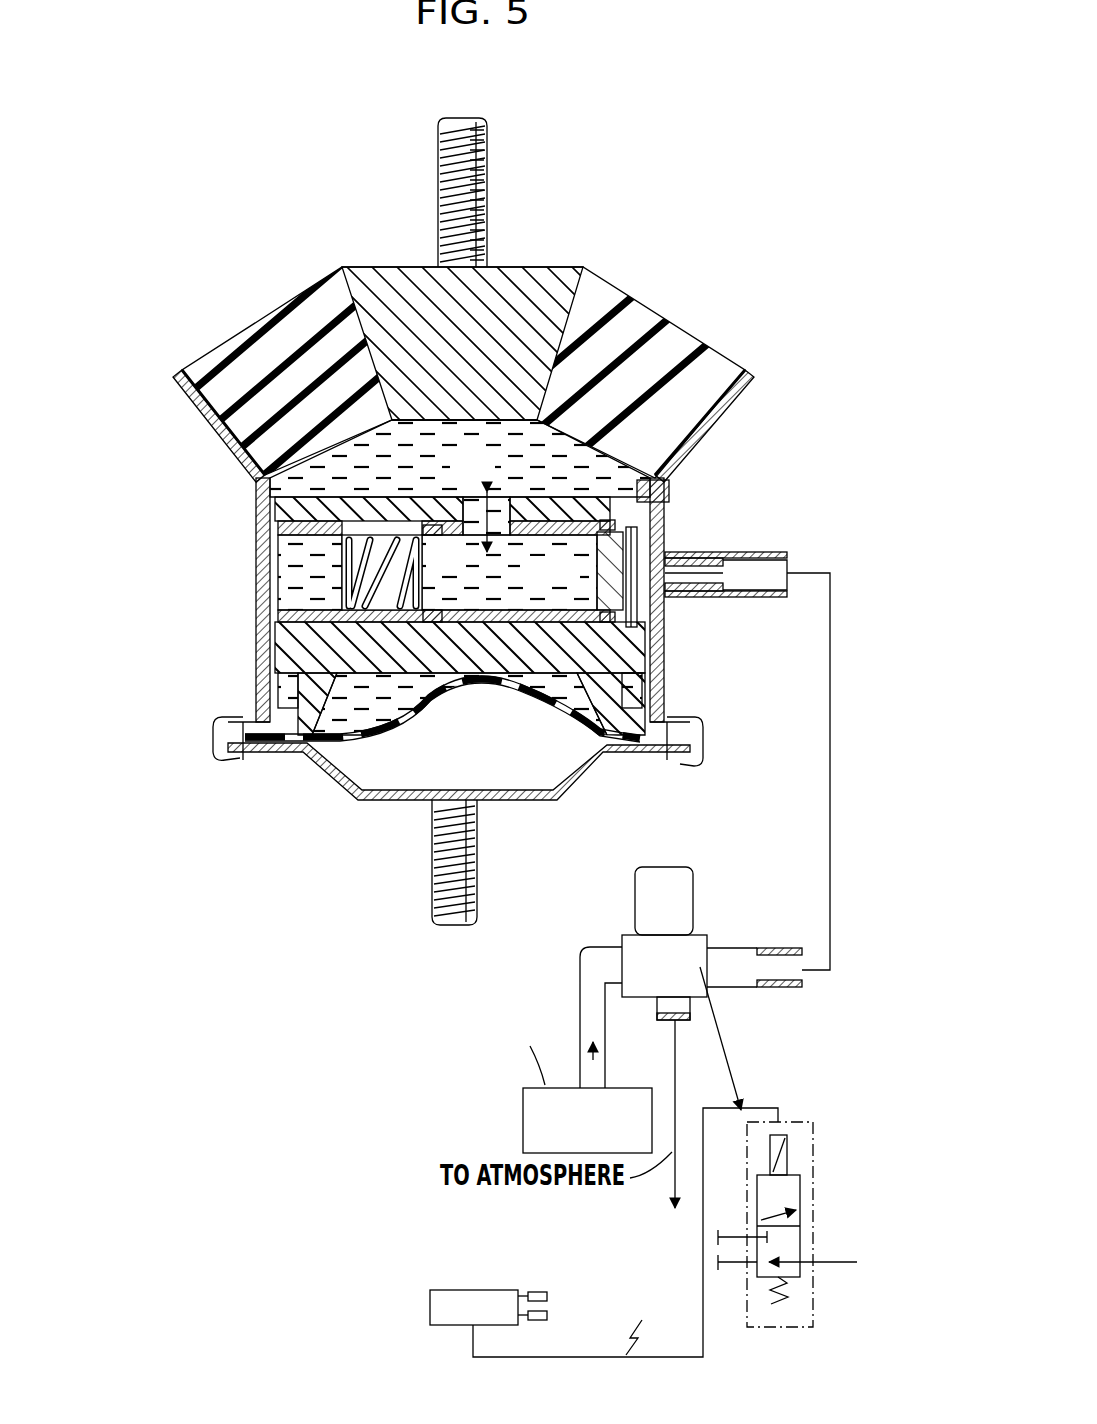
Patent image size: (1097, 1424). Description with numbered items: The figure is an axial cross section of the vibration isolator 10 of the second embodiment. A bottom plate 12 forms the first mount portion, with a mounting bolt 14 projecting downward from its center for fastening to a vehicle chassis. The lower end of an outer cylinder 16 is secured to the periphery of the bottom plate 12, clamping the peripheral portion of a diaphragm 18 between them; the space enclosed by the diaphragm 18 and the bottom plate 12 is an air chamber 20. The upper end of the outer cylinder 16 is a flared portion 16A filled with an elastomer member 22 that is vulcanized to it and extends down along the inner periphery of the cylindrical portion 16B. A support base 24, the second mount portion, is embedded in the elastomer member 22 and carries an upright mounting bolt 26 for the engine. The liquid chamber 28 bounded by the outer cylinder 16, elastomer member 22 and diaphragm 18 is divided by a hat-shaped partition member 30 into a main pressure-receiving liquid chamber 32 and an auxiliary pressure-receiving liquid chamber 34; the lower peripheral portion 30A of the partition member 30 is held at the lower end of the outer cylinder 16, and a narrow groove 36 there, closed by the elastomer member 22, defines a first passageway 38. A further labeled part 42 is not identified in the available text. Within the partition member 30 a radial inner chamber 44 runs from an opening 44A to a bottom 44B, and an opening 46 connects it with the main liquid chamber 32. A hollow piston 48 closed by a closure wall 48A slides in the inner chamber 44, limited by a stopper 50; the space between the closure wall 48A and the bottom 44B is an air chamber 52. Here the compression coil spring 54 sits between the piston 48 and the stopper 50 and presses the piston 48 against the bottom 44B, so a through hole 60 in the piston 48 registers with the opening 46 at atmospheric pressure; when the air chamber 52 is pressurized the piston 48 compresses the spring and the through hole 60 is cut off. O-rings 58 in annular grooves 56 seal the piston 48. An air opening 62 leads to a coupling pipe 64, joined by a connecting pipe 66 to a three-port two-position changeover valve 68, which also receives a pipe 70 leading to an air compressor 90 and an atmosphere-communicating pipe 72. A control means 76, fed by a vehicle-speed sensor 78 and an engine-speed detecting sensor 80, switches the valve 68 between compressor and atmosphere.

The vibration isolator 10 is at (690, 212).
The bottom plate 12 is at (360, 798).
The mounting bolt 14 is at (432, 880).
The outer cylinder 16 is at (254, 612).
The flared portion 16A is at (200, 415).
The cylindrical portion 16B is at (262, 552).
The diaphragm 18 is at (370, 712).
The air chamber 20 is at (508, 756).
The elastomer member 22 is at (243, 325).
The support base 24 is at (535, 268).
The mounting bolt 26 is at (487, 150).
The liquid chamber 28 is at (688, 432).
The partition member 30 is at (262, 490).
The lower peripheral portion 30A is at (262, 735).
The main pressure-receiving liquid chamber 32 is at (490, 477).
The auxiliary pressure-receiving liquid chamber 34 is at (562, 765).
The narrow groove 36 is at (290, 705).
The first passageway 38 is at (278, 690).
The spring chamber 42 is at (300, 594).
The inner chamber 44 is at (388, 715).
The opening of the inner chamber 44A is at (262, 523).
The bottom of the inner chamber 44B is at (655, 650).
The opening 46 is at (605, 476).
The piston 48 is at (640, 540).
The closure wall 48A is at (596, 562).
The stopper 50 is at (252, 598).
The air chamber 52 is at (660, 622).
The compression coil spring 54 is at (410, 687).
The annular groove 56 is at (672, 490).
The O-ring 58 is at (655, 522).
The through hole 60 is at (480, 540).
The air opening 62 is at (770, 600).
The coupling pipe 64 is at (670, 600).
The connecting pipe 66 is at (755, 549).
The three-port two-position changeover valve 68 is at (702, 893).
The pipe 70 is at (608, 935).
The atmosphere-communicating pipe 72 is at (655, 1016).
The control means 76 is at (450, 1288).
The vehicle-speed sensor 78 is at (549, 1296).
The engine-speed detecting sensor 80 is at (549, 1318).
The air compressor 90 is at (522, 1106).